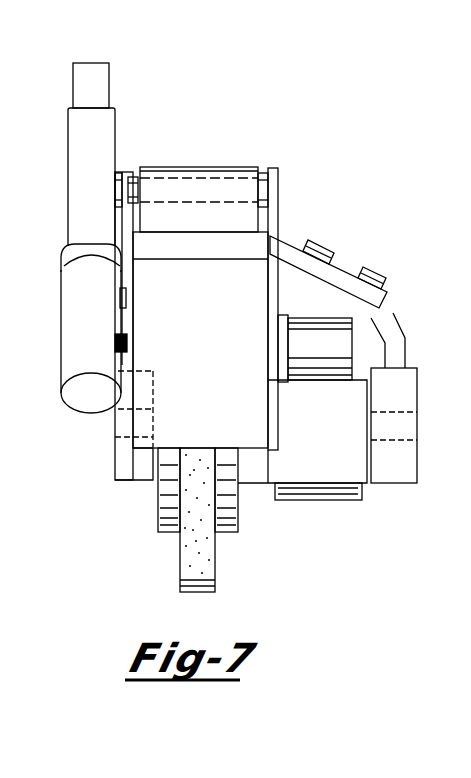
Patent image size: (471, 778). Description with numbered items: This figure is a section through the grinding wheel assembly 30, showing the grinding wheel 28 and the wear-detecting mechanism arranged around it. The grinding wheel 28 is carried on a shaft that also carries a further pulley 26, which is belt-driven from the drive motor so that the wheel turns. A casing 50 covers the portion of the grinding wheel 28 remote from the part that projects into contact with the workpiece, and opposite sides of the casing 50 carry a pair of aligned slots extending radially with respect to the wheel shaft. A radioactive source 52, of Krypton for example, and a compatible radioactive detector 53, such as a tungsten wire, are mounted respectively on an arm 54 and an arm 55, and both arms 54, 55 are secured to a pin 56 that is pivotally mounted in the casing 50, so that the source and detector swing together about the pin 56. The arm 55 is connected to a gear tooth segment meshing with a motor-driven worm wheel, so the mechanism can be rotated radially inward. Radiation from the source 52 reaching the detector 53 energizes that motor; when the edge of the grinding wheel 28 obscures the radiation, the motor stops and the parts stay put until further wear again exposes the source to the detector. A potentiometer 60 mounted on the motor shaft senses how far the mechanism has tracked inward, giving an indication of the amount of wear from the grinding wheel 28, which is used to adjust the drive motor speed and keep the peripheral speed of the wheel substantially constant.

The further pulley 26 is at (327, 495).
The grinding wheel 28 is at (188, 573).
The grinding wheel assembly 30 is at (345, 178).
The casing 50 is at (237, 283).
The radioactive source 52 is at (337, 343).
The radioactive detector 53 is at (61, 333).
The arm 54 is at (277, 281).
The arm 55 is at (122, 224).
The pin 56 is at (138, 178).
The potentiometer 60 is at (98, 70).